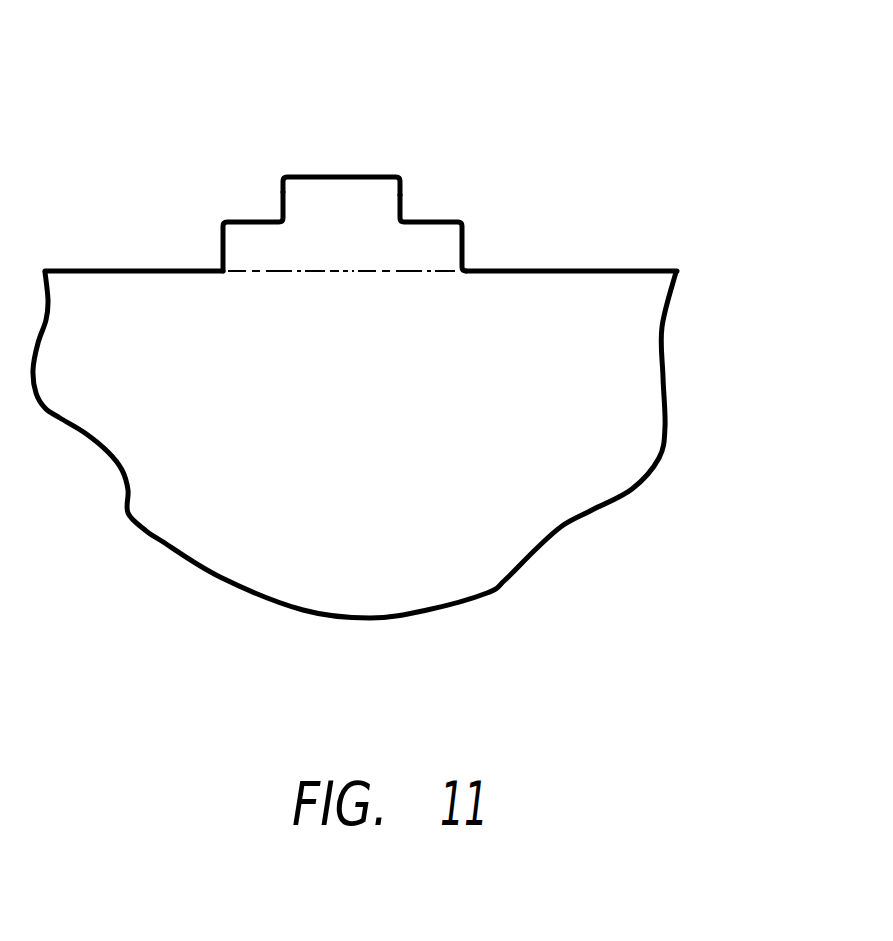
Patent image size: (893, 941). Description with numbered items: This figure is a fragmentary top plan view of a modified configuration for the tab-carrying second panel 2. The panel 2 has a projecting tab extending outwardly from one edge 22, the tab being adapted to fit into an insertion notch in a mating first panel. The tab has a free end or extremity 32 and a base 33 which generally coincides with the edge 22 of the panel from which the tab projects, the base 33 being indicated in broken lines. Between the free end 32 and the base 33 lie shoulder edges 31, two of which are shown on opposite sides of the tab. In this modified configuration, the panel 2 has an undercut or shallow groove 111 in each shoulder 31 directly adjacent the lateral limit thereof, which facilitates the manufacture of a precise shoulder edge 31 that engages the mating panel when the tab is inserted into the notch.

The panel 2 is at (633, 443).
The edge 22 is at (580, 268).
The shoulder edge 31 is at (248, 222).
The free end 32 is at (345, 177).
The groove 111 is at (407, 222).
The base 33 is at (435, 263).